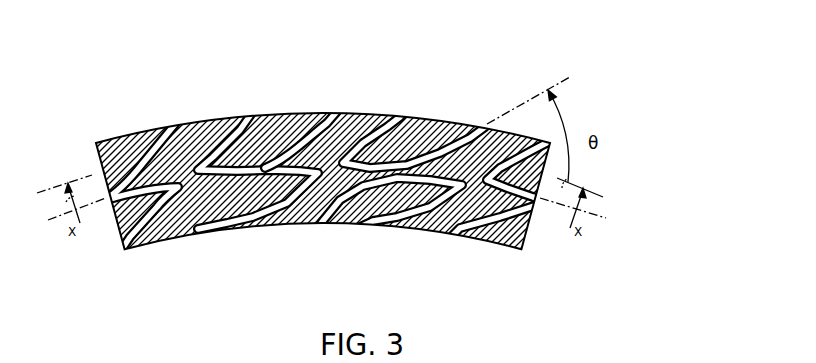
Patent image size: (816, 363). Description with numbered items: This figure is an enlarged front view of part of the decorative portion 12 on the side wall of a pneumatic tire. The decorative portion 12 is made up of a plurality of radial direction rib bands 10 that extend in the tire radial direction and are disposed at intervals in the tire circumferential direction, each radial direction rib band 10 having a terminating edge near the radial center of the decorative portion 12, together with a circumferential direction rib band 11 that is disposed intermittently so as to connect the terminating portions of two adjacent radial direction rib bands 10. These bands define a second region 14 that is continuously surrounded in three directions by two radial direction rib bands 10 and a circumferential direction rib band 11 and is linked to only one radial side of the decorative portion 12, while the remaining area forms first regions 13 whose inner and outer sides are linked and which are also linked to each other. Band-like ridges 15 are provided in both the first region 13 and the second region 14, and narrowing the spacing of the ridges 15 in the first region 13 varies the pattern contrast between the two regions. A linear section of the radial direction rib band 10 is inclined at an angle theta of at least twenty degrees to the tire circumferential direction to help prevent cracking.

The radial direction rib band 10 is at (238, 115).
The circumferential direction rib band 11 is at (290, 226).
The decorative portion 12 is at (383, 108).
The first region 13 is at (407, 228).
The second region 14 is at (360, 226).
The ridges 15 is at (275, 116).